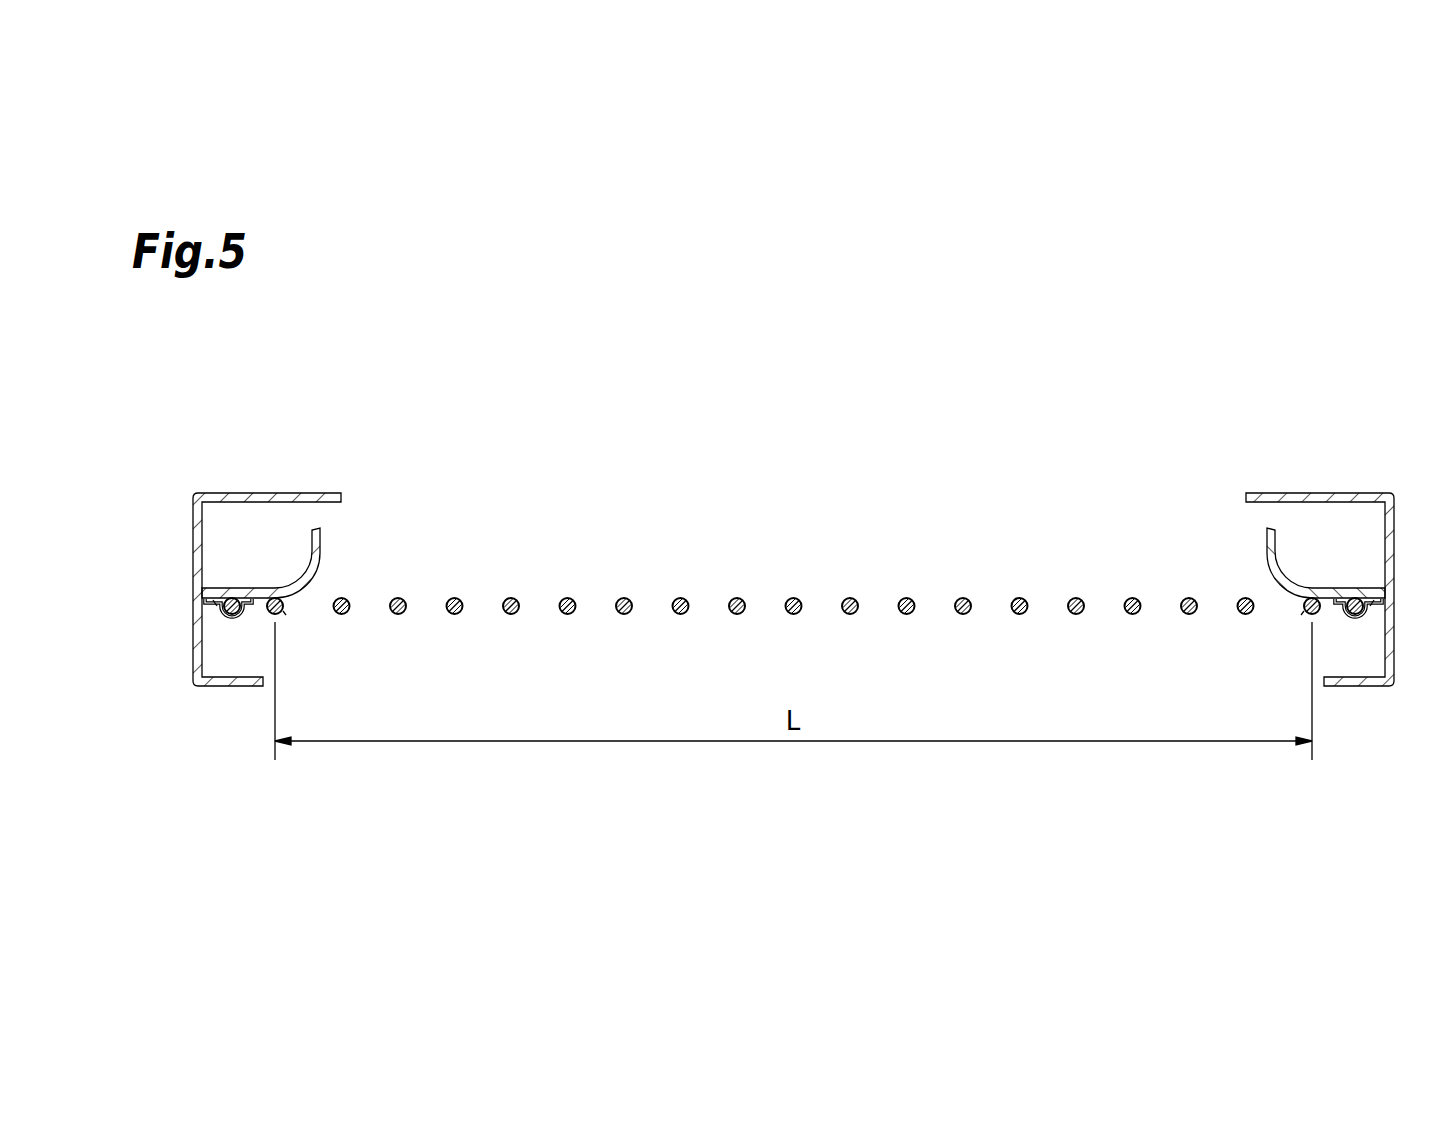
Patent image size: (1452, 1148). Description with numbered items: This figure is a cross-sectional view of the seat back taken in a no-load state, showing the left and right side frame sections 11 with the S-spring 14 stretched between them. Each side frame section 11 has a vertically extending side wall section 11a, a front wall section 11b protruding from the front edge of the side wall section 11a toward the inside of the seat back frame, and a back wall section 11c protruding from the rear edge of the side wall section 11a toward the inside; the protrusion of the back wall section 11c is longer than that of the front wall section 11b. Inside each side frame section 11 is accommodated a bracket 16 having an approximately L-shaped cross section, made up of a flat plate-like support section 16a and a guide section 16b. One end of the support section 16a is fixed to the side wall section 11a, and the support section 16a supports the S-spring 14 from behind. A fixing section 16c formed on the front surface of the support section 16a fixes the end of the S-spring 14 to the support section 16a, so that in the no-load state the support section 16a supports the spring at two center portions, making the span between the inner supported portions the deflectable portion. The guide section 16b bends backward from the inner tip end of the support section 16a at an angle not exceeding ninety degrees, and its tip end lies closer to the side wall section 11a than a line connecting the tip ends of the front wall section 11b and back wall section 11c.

The side frame section 11 is at (792, 594).
The side wall section 11a is at (196, 538).
The front wall section 11b is at (238, 688).
The back wall section 11c is at (268, 492).
The S-spring 14 is at (567, 597).
The bracket 16 is at (793, 630).
The support section 16a is at (258, 604).
The guide section 16b is at (321, 552).
The fixing section 16c is at (236, 617).